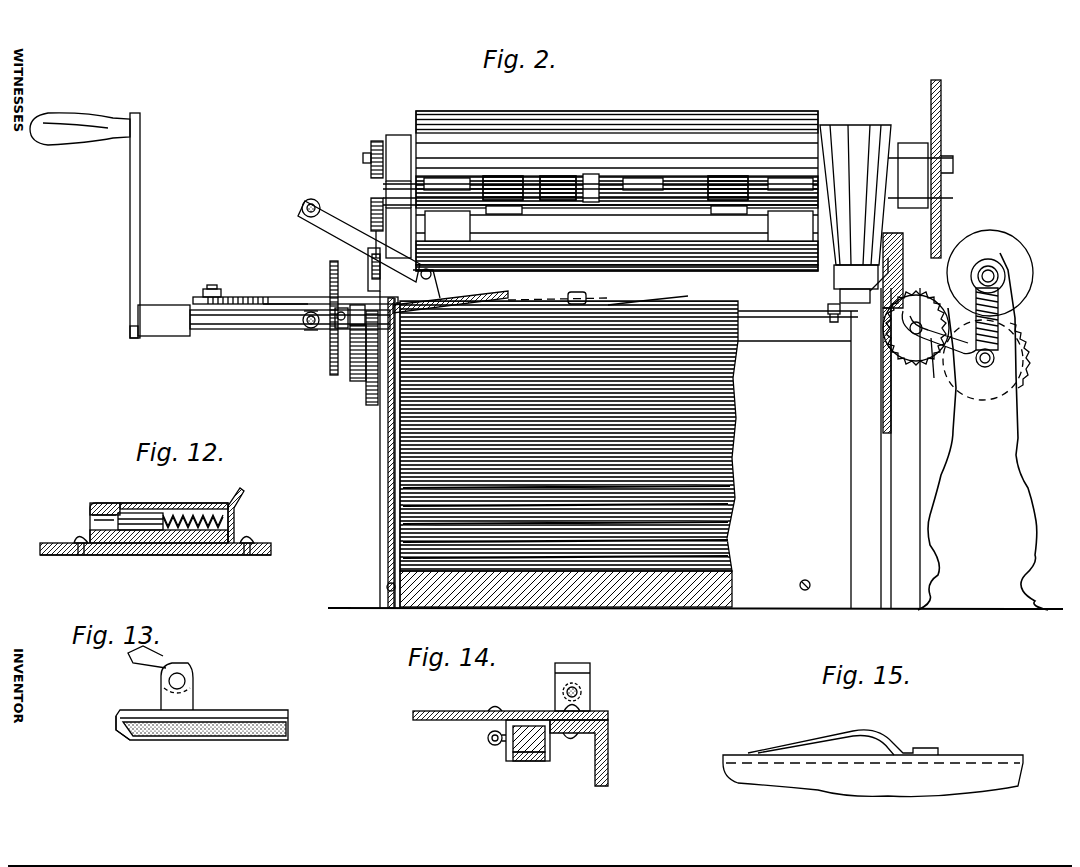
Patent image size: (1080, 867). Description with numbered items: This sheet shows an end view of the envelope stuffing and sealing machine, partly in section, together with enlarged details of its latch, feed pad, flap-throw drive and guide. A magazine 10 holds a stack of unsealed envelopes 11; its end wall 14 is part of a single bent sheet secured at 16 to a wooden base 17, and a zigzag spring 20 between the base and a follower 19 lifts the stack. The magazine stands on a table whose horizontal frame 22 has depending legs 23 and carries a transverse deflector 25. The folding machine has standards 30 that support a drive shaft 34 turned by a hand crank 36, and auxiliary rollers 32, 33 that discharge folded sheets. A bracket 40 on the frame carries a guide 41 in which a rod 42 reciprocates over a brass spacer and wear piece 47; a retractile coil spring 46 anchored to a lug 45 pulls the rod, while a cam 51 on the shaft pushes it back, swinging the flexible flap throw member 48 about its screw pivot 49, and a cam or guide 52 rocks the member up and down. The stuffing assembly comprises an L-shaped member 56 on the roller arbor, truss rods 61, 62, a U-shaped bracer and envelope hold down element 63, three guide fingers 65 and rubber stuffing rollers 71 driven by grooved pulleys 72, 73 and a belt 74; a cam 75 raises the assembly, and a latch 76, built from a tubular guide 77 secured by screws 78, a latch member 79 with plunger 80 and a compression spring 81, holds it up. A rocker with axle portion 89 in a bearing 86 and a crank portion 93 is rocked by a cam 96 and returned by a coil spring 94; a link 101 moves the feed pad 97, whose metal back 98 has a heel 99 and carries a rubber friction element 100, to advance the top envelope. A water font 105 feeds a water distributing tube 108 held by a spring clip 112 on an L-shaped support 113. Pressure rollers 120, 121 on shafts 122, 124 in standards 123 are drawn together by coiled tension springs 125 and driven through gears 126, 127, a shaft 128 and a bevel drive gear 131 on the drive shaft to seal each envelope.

In FIG. 2, the magazine 10 is at (764, 600).
In FIG. 2, the envelopes 11 is at (380, 452).
In FIG. 2, the end wall 14 is at (380, 517).
In FIG. 2, the securing means 16 is at (378, 580).
In FIG. 2, the bottom or base 17 is at (588, 593).
In FIG. 2, the follower 19 is at (723, 474).
In FIG. 2, the zigzag spring 20 is at (724, 526).
In FIG. 2, the horizontal frame 22 is at (794, 331).
In FIG. 15, the horizontal frame 22 is at (970, 776).
In FIG. 2, the legs 23 is at (843, 502).
In FIG. 2, the deflector 25 is at (760, 300).
In FIG. 2, the standards 30 is at (392, 127).
In FIG. 2, the auxiliary roller 32 is at (660, 112).
In FIG. 2, the auxiliary roller 33 is at (640, 269).
In FIG. 2, the drive shaft 34 is at (240, 316).
In FIG. 2, the hand crank 36 is at (122, 200).
In FIG. 2, the bracket 40 is at (226, 289).
In FIG. 12, the bracket 40 is at (252, 548).
In FIG. 14, the bracket 40 is at (440, 695).
In FIG. 2, the guide 41 is at (334, 322).
In FIG. 14, the guide 41 is at (540, 752).
In FIG. 2, the rod 42 is at (348, 300).
In FIG. 14, the rod 42 is at (500, 752).
In FIG. 14, the lug 45 is at (480, 742).
In FIG. 14, the retractile coil spring 46 is at (480, 732).
In FIG. 14, the brass spacer and wear piece 47 is at (522, 756).
In FIG. 2, the flexible flap throw member 48 is at (265, 289).
In FIG. 2, the screw pivot 49 is at (203, 277).
In FIG. 2, the cam 51 is at (348, 372).
In FIG. 15, the cam or guide 52 is at (835, 728).
In FIG. 2, the L-shaped member 56 is at (362, 169).
In FIG. 2, the truss rod 61 is at (560, 170).
In FIG. 2, the truss rod 62 is at (586, 170).
In FIG. 2, the bracer and envelope hold down element 63 is at (670, 207).
In FIG. 2, the guide fingers 65 is at (440, 170).
In FIG. 2, the stuffing rollers 71 is at (500, 170).
In FIG. 2, the grooved pulley 72 is at (923, 84).
In FIG. 2, the grooved pulley 73 is at (923, 230).
In FIG. 2, the belt 74 is at (933, 137).
In FIG. 2, the cam 75 is at (364, 395).
In FIG. 2, the latch 76 is at (364, 265).
In FIG. 12, the latch 76 is at (232, 504).
In FIG. 14, the latch 76 is at (582, 684).
In FIG. 12, the tubular guide 77 is at (152, 547).
In FIG. 12, the screws 78 is at (66, 532).
In FIG. 14, the screws 78 is at (582, 702).
In FIG. 12, the latch member 79 is at (112, 495).
In FIG. 12, the plunger 80 is at (152, 505).
In FIG. 12, the compression spring 81 is at (200, 495).
In FIG. 14, the compression spring 81 is at (550, 684).
In FIG. 2, the bearing 86 is at (300, 304).
In FIG. 2, the axle portion 89 is at (300, 322).
In FIG. 2, the crank portion 93 is at (294, 200).
In FIG. 2, the coil spring 94 is at (297, 318).
In FIG. 2, the cam 96 is at (324, 358).
In FIG. 2, the feed pad 97 is at (492, 298).
In FIG. 13, the feed pad 97 is at (258, 702).
In FIG. 13, the metal back 98 is at (218, 702).
In FIG. 13, the heel 99 is at (115, 726).
In FIG. 13, the rubber friction element 100 is at (234, 729).
In FIG. 2, the link 101 is at (340, 204).
In FIG. 13, the link 101 is at (158, 657).
In FIG. 2, the water font or bottle 105 is at (842, 125).
In FIG. 2, the water distributing tube 108 is at (880, 282).
In FIG. 2, the spring clip 112 is at (827, 306).
In FIG. 2, the L-shaped support 113 is at (832, 290).
In FIG. 2, the pressure roller 120 is at (982, 242).
In FIG. 2, the pressure roller 121 is at (1006, 386).
In FIG. 2, the shaft 122 is at (988, 266).
In FIG. 2, the standards 123 is at (1012, 480).
In FIG. 2, the shaft 124 is at (988, 351).
In FIG. 2, the coiled tension springs 125 is at (990, 302).
In FIG. 2, the gear 126 is at (1013, 332).
In FIG. 2, the gear 127 is at (885, 332).
In FIG. 2, the shaft 128 is at (926, 371).
In FIG. 2, the bevel drive gear 131 is at (885, 397).